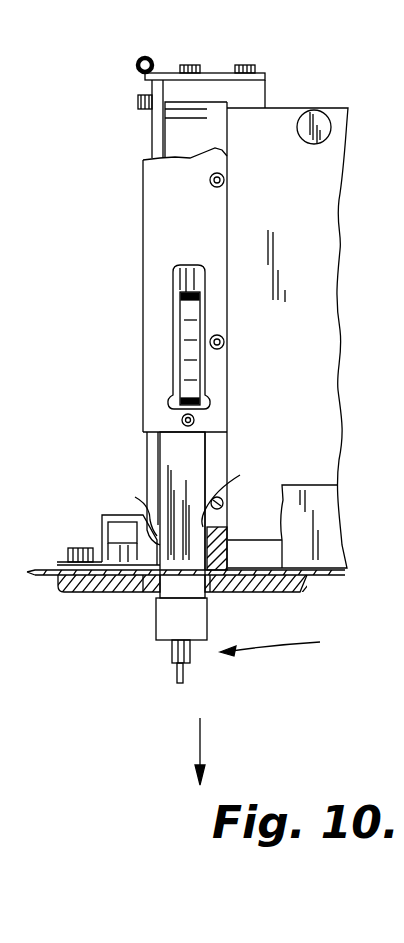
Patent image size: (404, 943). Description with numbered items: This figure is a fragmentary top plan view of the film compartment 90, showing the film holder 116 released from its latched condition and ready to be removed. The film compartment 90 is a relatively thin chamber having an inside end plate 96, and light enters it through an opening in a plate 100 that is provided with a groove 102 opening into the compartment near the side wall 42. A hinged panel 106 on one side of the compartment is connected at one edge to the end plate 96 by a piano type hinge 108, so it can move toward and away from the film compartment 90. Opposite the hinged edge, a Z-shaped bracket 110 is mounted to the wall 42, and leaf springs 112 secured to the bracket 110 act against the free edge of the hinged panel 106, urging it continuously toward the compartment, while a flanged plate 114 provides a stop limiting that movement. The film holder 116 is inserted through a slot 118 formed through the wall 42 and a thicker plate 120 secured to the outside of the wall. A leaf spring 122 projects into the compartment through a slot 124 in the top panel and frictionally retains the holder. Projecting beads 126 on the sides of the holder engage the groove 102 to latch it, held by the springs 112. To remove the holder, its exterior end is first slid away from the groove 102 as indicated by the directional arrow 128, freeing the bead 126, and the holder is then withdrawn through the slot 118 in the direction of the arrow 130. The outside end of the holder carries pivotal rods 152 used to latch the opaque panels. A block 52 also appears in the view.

The side wall 42 is at (332, 575).
The support block 52 is at (335, 522).
The film compartment 90 is at (198, 455).
The inside end plate 96 is at (263, 88).
The plate 100 is at (228, 550).
The groove 102 is at (215, 535).
The hinged panel 106 is at (155, 445).
The piano type hinge 108 is at (147, 59).
The Z-shaped bracket 110 is at (103, 518).
The leaf springs 112 is at (113, 578).
The flanged plate 114 is at (143, 580).
The film holder 116 is at (150, 642).
The slot 118 is at (212, 592).
The thicker plate 120 is at (290, 592).
The leaf spring 122 is at (180, 300).
The slot 124 is at (196, 268).
The projecting beads 126 is at (188, 499).
The directional arrow 128 is at (275, 645).
The arrow 130 is at (203, 732).
The pivotal rods 152 is at (178, 683).